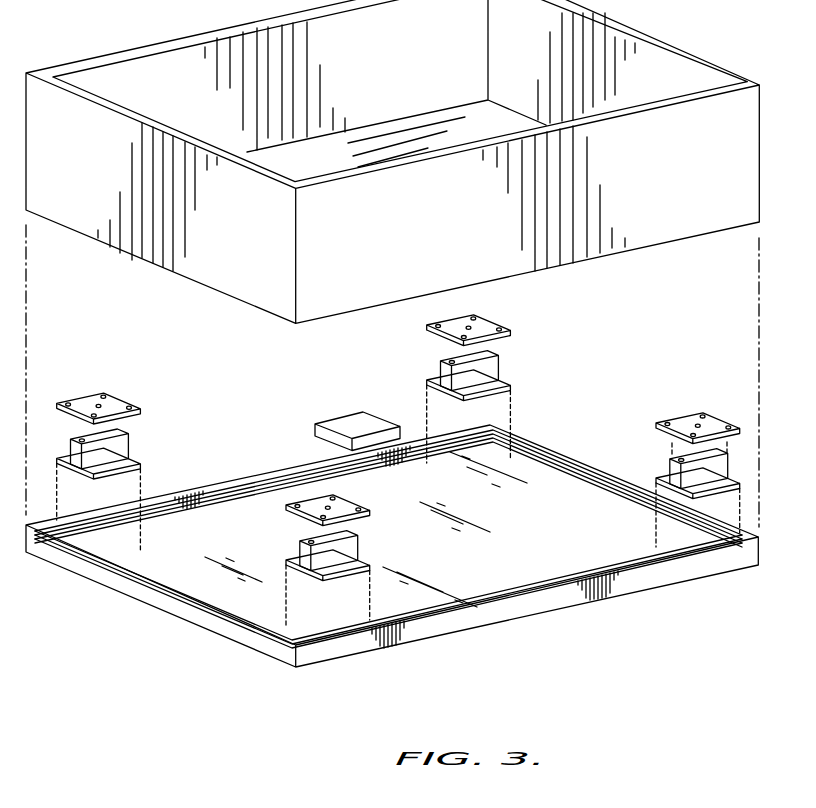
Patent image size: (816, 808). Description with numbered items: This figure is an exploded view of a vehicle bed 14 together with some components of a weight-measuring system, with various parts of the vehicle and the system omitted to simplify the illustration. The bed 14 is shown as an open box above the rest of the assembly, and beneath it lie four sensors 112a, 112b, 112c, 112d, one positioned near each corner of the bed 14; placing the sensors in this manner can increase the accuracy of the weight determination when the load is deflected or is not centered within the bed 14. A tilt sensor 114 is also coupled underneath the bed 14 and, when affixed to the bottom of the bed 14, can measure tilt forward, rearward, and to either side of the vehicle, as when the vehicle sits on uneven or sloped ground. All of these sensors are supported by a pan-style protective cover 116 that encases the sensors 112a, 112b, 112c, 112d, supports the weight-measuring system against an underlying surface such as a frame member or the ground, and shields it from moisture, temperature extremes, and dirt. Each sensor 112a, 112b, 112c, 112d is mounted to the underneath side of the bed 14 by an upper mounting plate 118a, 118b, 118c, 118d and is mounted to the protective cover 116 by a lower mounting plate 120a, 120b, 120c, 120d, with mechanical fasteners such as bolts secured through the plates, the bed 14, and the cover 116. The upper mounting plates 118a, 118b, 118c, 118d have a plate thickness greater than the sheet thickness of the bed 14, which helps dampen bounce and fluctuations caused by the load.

The bed 14 is at (50, 100).
The sensor 112a is at (350, 546).
The sensor 112b is at (672, 466).
The sensor 112c is at (492, 367).
The sensor 112d is at (122, 447).
The tilt sensor 114 is at (345, 420).
The protective cover 116 is at (660, 580).
The upper mounting plate 118a is at (345, 498).
The upper mounting plate 118b is at (675, 417).
The upper mounting plate 118c is at (487, 320).
The upper mounting plate 118d is at (82, 398).
The lower mounting plate 120a is at (310, 578).
The lower mounting plate 120b is at (657, 482).
The lower mounting plate 120c is at (438, 390).
The lower mounting plate 120d is at (67, 470).